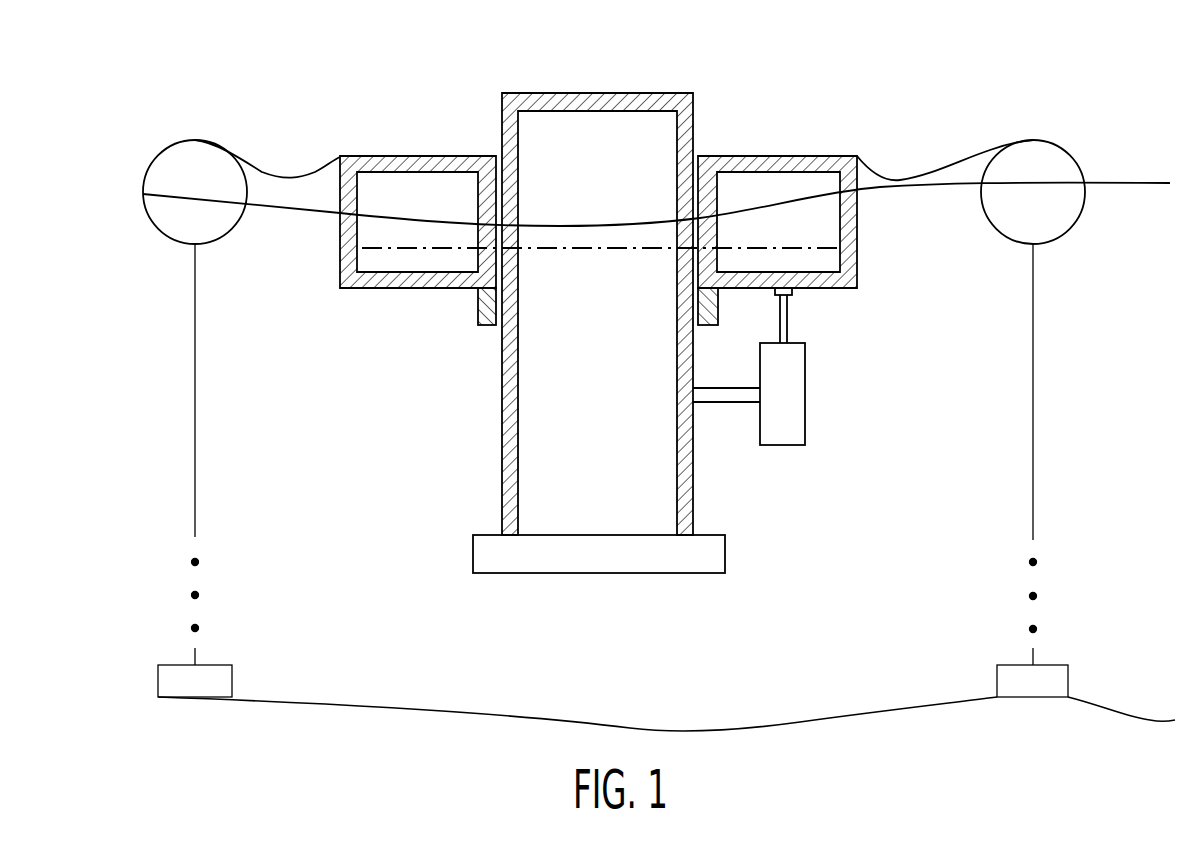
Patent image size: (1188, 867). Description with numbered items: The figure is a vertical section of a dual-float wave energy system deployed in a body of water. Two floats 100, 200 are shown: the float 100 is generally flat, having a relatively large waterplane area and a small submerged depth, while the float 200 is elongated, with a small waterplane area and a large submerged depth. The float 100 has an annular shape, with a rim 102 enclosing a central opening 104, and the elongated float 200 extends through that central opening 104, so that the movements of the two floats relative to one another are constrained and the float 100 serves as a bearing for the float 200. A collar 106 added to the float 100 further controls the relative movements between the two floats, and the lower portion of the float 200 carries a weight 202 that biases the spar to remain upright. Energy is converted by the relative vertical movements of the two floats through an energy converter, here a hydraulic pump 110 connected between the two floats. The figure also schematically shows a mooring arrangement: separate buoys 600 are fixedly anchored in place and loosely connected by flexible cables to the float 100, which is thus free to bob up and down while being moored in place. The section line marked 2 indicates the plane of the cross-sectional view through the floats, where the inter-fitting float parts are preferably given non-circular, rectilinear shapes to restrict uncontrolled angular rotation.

The float 100 is at (587, 219).
The rim 102 is at (377, 289).
The central opening 104 is at (498, 175).
The collar 106 is at (478, 318).
The hydraulic pump 110 is at (805, 405).
The float 200 is at (502, 460).
The weight 202 is at (725, 552).
The buoys 600 is at (165, 143).
The section line 2 is at (340, 248).